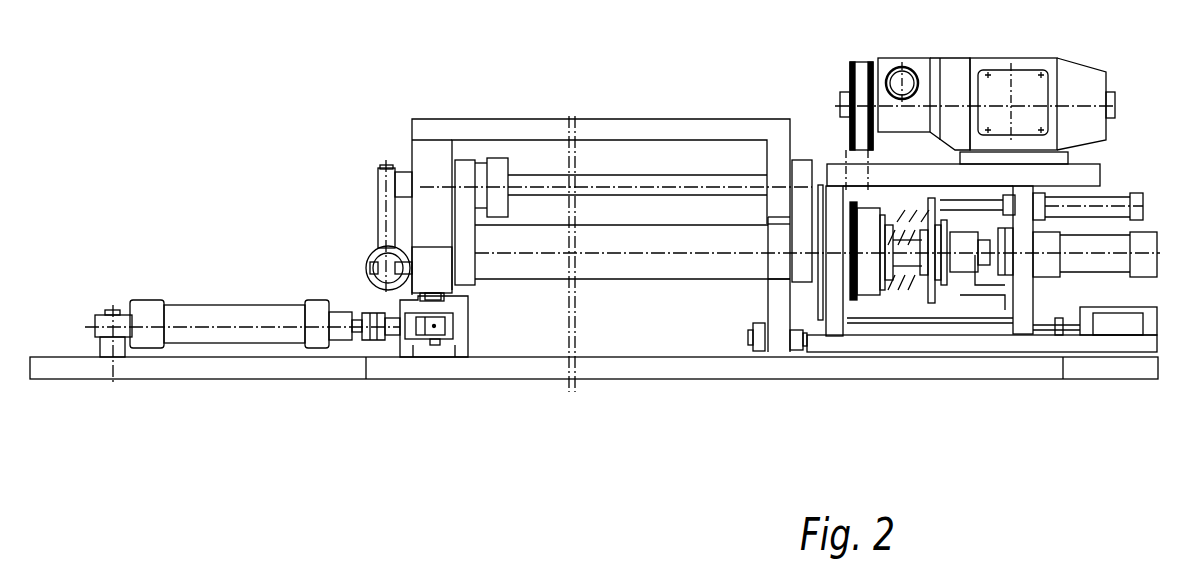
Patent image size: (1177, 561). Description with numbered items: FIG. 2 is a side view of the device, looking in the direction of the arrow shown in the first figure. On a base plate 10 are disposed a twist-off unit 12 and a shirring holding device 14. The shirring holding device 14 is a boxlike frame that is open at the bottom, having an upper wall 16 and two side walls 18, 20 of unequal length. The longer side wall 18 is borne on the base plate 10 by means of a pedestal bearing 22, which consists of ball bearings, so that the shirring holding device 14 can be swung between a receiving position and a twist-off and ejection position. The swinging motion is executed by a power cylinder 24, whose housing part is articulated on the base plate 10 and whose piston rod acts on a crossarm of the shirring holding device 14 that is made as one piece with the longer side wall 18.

The base plate 10 is at (606, 372).
The twist-off unit 12 is at (950, 54).
The shirring holding device 14 is at (548, 119).
The upper wall 16 is at (675, 128).
The longer side wall 18 is at (424, 140).
The side wall 20 is at (782, 150).
The pedestal bearing 22 is at (462, 312).
The power cylinder 24 is at (240, 315).